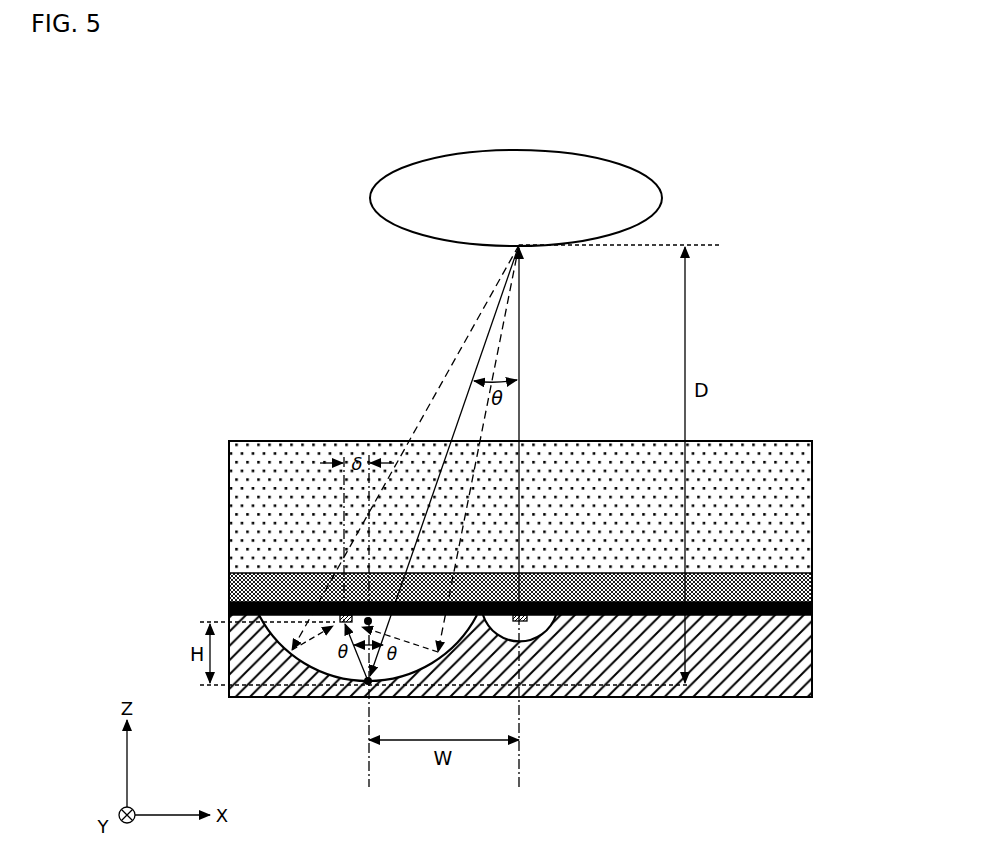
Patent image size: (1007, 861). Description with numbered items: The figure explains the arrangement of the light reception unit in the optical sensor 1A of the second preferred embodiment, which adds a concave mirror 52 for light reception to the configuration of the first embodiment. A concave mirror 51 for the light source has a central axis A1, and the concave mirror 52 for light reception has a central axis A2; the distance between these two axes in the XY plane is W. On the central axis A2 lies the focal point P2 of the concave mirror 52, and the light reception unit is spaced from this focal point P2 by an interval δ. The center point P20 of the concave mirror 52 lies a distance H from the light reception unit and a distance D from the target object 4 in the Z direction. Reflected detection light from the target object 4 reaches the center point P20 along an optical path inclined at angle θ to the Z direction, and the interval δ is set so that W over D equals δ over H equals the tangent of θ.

The optical sensor 1A is at (199, 448).
The target object 4 is at (643, 153).
The concave mirror for the light source 51 is at (537, 634).
The concave mirror for light reception 52 is at (273, 623).
The focal point P2 is at (371, 612).
The center point of the concave mirror for light reception P20 is at (353, 690).
The central axis of the concave mirror for the light source A1 is at (517, 712).
The central axis of the concave mirror for light reception A2 is at (367, 632).